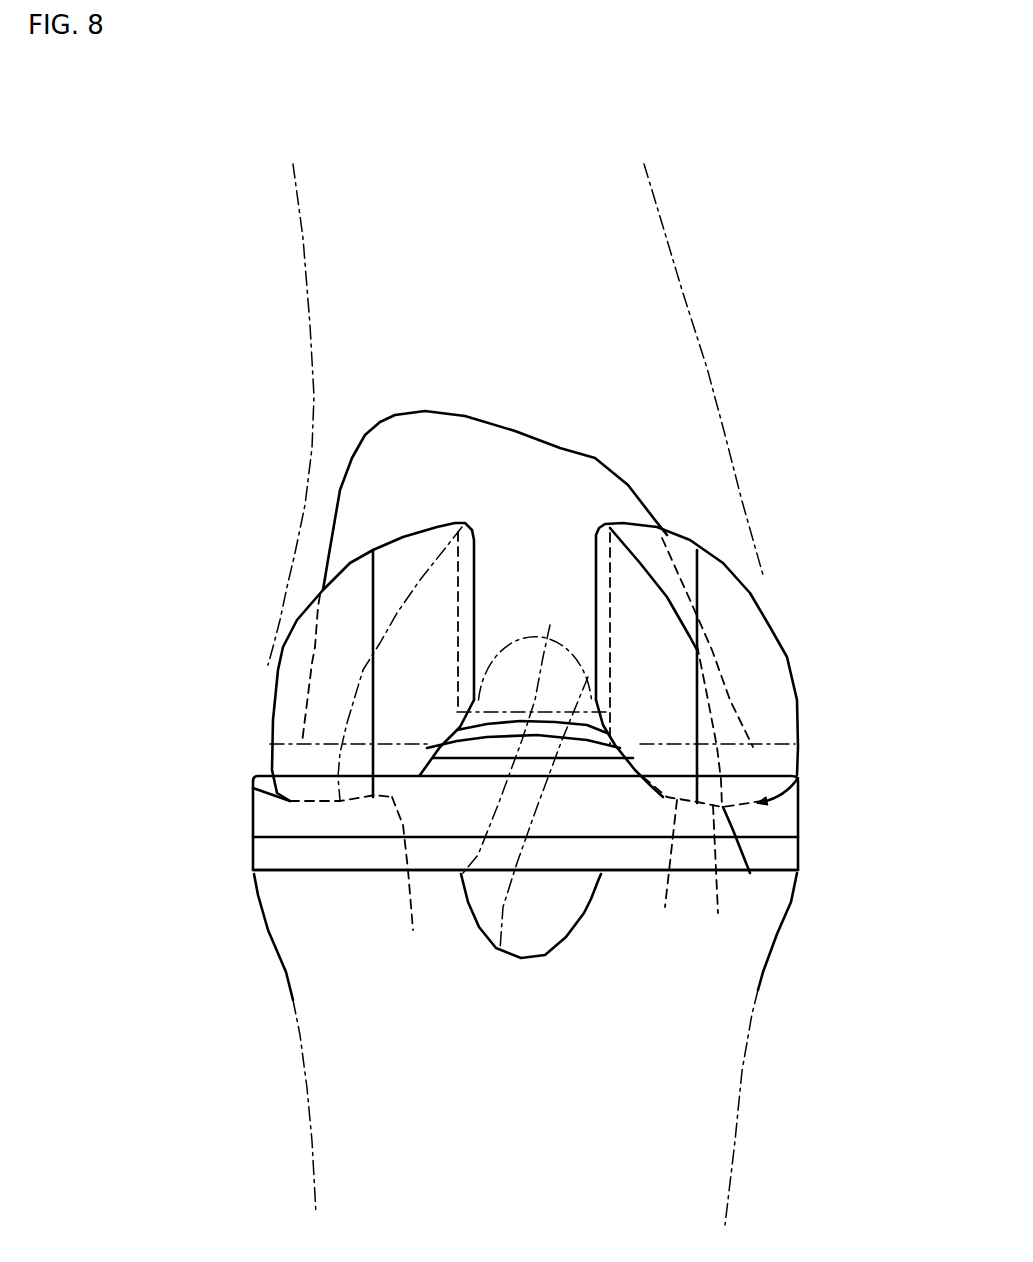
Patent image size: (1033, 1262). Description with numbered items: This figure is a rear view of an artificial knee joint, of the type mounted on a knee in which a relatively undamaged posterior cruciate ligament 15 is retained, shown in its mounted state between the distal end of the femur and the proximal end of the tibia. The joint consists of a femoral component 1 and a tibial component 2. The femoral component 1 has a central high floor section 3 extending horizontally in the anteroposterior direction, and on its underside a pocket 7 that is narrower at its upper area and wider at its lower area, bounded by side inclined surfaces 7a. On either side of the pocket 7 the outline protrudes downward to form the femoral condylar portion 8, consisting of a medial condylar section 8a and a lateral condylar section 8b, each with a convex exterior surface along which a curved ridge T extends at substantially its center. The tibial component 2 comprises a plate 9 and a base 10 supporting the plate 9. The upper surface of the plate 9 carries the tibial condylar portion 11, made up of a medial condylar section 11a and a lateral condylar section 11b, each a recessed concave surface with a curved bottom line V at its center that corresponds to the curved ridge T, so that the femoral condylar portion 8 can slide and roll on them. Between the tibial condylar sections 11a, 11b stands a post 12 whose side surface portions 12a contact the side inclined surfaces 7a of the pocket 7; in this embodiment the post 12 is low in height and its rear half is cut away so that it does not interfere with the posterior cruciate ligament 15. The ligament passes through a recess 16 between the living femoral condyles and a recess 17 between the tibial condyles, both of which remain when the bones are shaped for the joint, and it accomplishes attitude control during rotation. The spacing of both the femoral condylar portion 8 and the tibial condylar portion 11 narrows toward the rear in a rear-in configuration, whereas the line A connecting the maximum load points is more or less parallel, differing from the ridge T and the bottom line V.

The femoral component 1 is at (607, 551).
The tibial component 2 is at (573, 814).
The high floor section 3 is at (532, 679).
The pocket 7 is at (544, 717).
The side inclined surfaces 7a is at (652, 747).
The femoral condylar portion 8 is at (724, 665).
The medial condylar section 8a is at (769, 764).
The lateral condylar section 8b is at (341, 861).
The plate 9 is at (565, 827).
The base 10 is at (563, 867).
The tibial condylar portion 11 is at (716, 875).
The medial condylar section 11a is at (668, 871).
The lateral condylar section 11b is at (413, 881).
The post 12 is at (424, 804).
The side surface portions 12a is at (629, 771).
The posterior cruciate ligament 15 is at (468, 761).
The recess 16 is at (535, 625).
The recess 17 is at (531, 949).
The line connecting the maximum load points A is at (752, 676).
The curved ridge T is at (759, 642).
The curved bottom line V is at (743, 857).